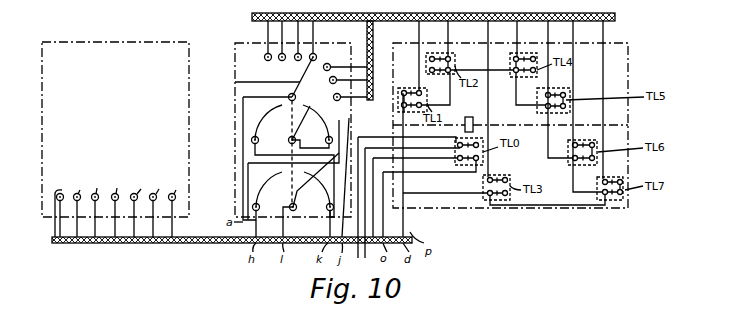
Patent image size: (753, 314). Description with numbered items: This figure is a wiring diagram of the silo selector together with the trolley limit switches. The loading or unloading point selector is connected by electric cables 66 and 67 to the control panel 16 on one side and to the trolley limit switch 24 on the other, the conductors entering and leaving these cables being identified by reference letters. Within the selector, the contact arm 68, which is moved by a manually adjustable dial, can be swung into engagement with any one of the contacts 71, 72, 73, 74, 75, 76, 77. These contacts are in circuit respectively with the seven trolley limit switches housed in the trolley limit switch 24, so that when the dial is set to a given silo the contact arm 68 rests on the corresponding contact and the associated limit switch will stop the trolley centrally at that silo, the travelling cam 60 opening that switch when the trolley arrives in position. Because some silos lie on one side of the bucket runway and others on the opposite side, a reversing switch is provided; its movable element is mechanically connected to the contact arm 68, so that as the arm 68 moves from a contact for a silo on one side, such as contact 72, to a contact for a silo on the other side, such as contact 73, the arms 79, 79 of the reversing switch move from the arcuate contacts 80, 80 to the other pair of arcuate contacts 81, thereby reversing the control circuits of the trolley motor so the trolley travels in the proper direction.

The control panel 16 is at (50, 128).
The trolley limit switch 24 is at (629, 51).
The travelling cam 60 is at (469, 117).
The electric cable 66 is at (192, 244).
The electric cable 67 is at (613, 15).
The contact arm 68 is at (235, 82).
The contact 71 is at (265, 59).
The contact 72 is at (280, 60).
The contact 73 is at (297, 61).
The contact 74 is at (316, 54).
The contact 75 is at (331, 64).
The contact 76 is at (329, 80).
The contact 77 is at (333, 97).
The arm of reversing switch 79 is at (298, 124).
The arcuate contact 80 is at (332, 127).
The arcuate contact 81 is at (266, 117).